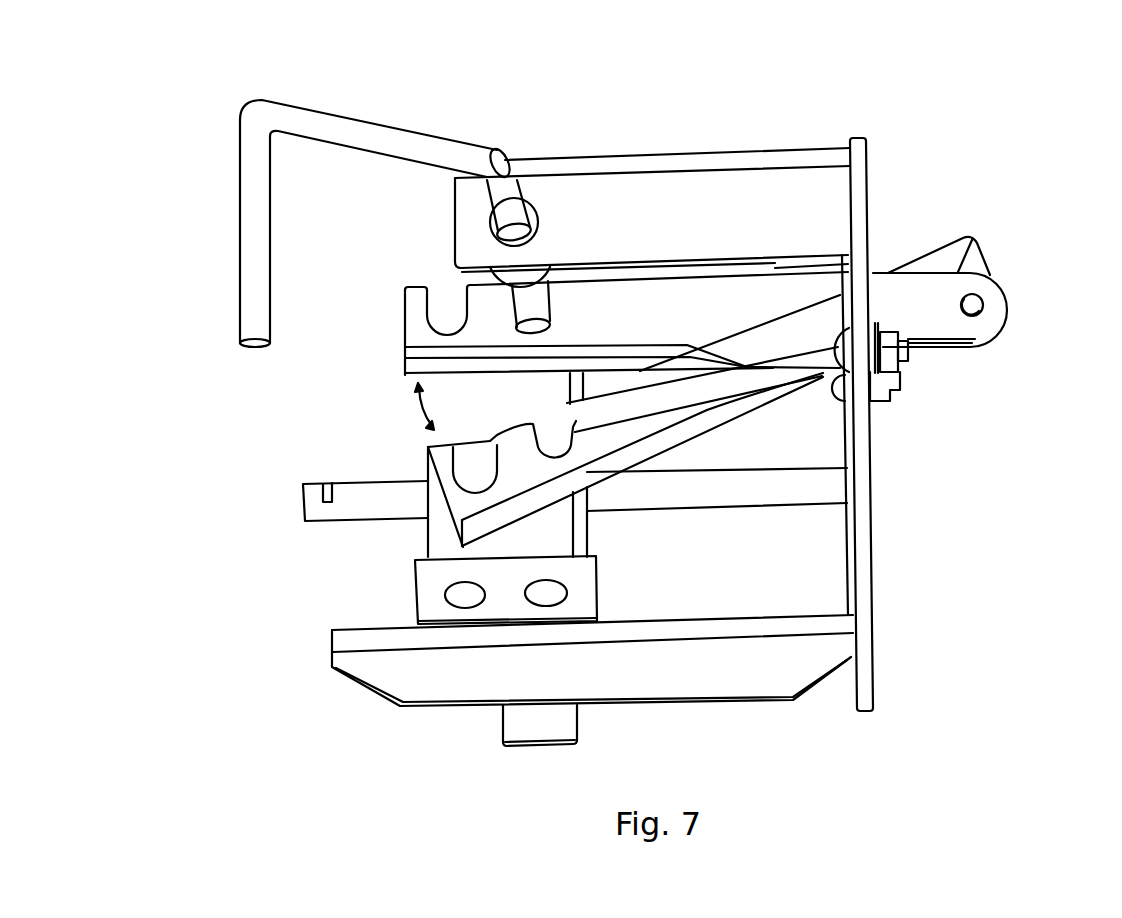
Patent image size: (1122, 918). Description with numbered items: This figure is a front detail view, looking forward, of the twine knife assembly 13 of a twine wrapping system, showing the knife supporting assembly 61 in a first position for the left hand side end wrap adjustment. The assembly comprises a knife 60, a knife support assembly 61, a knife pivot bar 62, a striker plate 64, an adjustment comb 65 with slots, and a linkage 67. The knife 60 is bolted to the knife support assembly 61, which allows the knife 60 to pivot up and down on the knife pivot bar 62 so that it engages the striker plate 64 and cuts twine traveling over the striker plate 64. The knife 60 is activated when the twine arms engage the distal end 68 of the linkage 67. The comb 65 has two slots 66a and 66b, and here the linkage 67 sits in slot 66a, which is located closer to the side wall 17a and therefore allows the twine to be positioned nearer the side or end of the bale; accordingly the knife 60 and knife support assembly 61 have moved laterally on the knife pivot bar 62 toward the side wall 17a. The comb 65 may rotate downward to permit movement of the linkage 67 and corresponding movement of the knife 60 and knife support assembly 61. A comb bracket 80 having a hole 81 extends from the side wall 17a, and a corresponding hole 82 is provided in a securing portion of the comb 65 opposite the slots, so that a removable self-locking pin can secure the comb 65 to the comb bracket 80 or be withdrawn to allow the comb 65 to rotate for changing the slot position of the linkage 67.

The twine knife assembly 13 is at (667, 112).
The side wall 17a is at (873, 593).
The knife 60 is at (415, 606).
The knife support assembly 61 is at (442, 545).
The knife pivot bar 62 is at (350, 493).
The striker plate 64 is at (363, 640).
The adjustment comb 65 is at (733, 300).
The slot 66a is at (550, 313).
The slot 66b is at (450, 310).
The linkage 67 is at (367, 130).
The distal end 68 is at (250, 262).
The comb bracket 80 is at (937, 330).
The hole 81 is at (977, 311).
The hole 82 is at (963, 263).